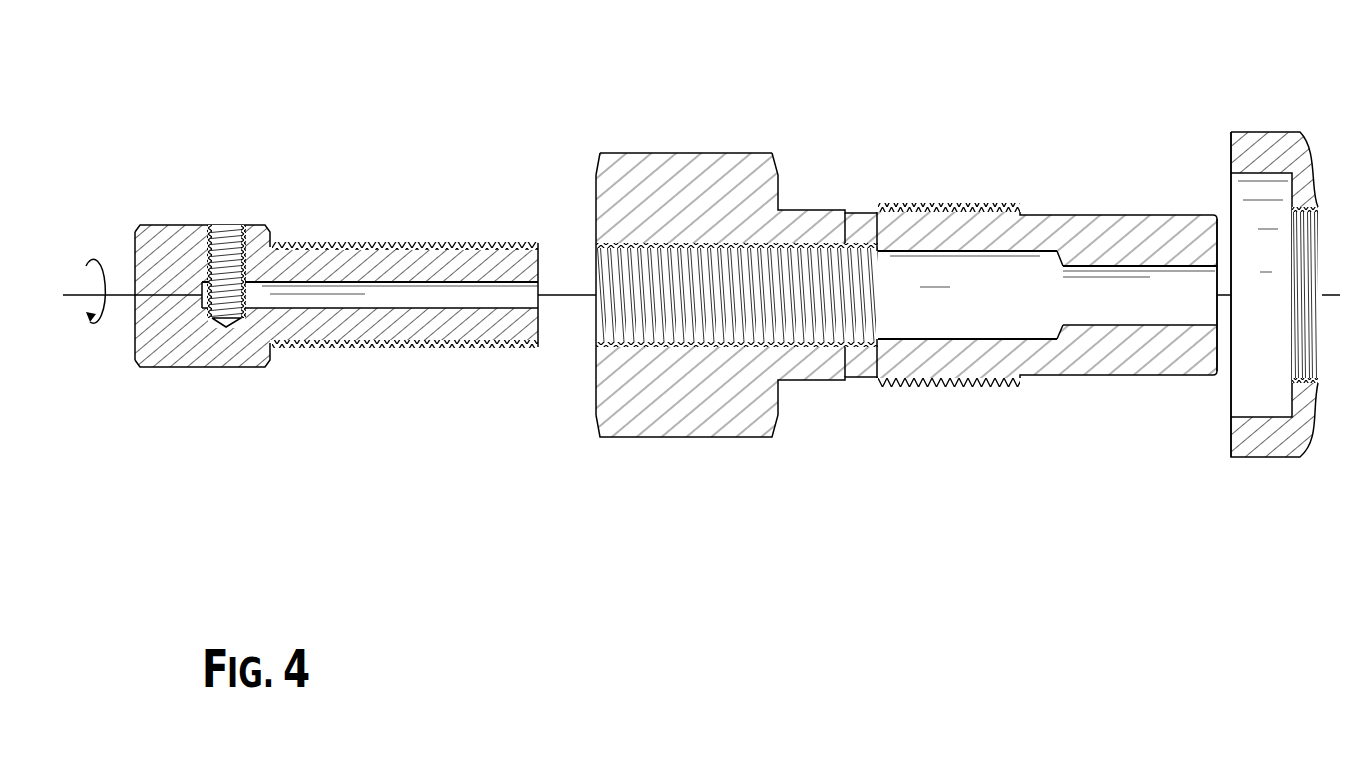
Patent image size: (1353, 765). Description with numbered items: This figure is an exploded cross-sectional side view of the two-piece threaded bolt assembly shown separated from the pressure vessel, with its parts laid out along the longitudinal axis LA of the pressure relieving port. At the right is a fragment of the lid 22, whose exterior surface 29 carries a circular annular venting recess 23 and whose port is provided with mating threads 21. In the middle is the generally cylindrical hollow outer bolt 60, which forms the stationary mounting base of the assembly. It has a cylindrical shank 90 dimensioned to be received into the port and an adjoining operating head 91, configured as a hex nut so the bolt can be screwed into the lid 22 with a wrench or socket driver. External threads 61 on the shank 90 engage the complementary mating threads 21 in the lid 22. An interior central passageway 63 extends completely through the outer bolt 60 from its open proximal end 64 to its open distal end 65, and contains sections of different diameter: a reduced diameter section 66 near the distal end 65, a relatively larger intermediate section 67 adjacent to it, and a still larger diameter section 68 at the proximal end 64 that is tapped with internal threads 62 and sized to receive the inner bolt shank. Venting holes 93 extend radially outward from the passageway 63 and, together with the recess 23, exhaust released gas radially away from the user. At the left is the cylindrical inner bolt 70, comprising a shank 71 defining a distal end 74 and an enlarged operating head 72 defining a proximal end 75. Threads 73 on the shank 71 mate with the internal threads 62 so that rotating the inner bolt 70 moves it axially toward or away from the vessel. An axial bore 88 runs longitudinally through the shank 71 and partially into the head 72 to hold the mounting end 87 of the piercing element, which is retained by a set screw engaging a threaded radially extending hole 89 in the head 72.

The mating threads 21 is at (1303, 192).
The lid 22 is at (1289, 282).
The annular venting recess 23 is at (1265, 408).
The exterior surface 29 is at (1228, 153).
The hollow outer bolt 60 is at (874, 297).
The external threads 61 is at (945, 388).
The internal threads 62 is at (737, 298).
The interior central passageway 63 is at (1010, 258).
The proximal end 64 is at (595, 210).
The distal end 65 is at (1217, 353).
The reduced diameter section 66 is at (1140, 327).
The intermediate section 67 is at (915, 252).
The larger diameter section 68 is at (682, 243).
The inner bolt 70 is at (305, 298).
The shank 71 is at (405, 293).
The operating head 72 is at (162, 281).
The threads 73 is at (306, 247).
The distal end 74 is at (538, 328).
The proximal end 75 is at (128, 332).
The mounting end 87 is at (200, 297).
The axial bore 88 is at (305, 302).
The threaded radially extending hole 89 is at (210, 245).
The shank 90 is at (949, 306).
The operating head 91 is at (642, 153).
The venting holes 93 is at (862, 367).
The longitudinal axis LA is at (66, 283).